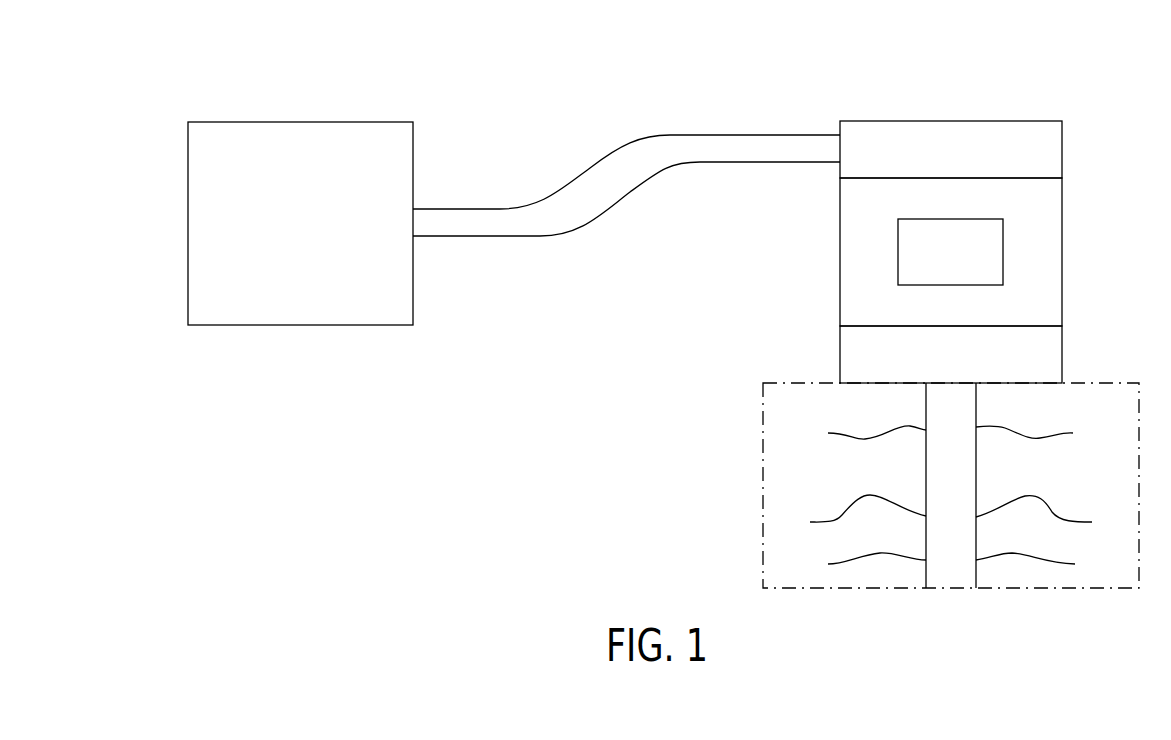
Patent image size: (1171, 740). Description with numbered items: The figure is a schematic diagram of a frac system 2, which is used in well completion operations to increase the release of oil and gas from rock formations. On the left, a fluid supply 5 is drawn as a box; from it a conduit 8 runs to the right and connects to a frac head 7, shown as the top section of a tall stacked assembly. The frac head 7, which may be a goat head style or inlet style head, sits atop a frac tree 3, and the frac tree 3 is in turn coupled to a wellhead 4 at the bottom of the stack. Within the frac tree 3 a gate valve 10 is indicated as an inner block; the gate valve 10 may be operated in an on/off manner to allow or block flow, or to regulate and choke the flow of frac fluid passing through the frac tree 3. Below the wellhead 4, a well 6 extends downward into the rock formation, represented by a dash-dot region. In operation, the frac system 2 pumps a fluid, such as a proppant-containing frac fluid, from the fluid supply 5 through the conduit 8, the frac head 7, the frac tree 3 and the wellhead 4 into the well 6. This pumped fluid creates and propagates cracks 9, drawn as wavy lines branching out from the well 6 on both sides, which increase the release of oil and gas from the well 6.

The frac system 2 is at (1076, 80).
The frac tree 3 is at (1066, 212).
The wellhead 4 is at (1062, 355).
The fluid supply 5 is at (300, 122).
The well 6 is at (927, 572).
The frac head 7 is at (1062, 148).
The conduit 8 is at (600, 170).
The cracks 9 is at (832, 524).
The gate valve 10 is at (1003, 268).